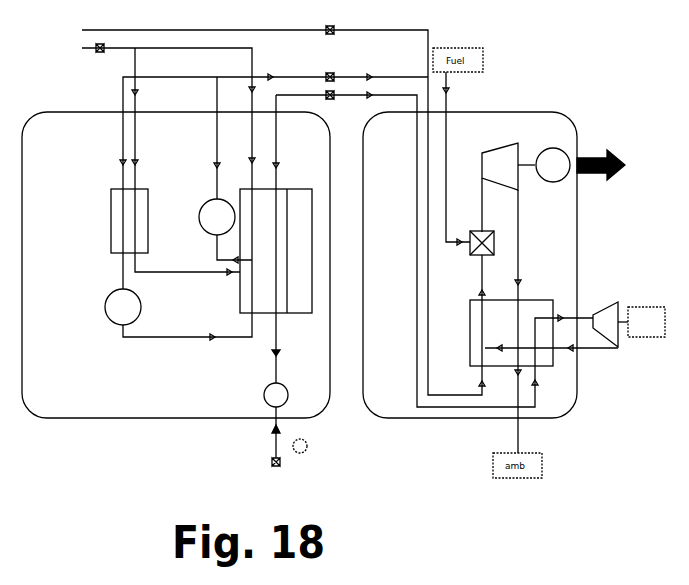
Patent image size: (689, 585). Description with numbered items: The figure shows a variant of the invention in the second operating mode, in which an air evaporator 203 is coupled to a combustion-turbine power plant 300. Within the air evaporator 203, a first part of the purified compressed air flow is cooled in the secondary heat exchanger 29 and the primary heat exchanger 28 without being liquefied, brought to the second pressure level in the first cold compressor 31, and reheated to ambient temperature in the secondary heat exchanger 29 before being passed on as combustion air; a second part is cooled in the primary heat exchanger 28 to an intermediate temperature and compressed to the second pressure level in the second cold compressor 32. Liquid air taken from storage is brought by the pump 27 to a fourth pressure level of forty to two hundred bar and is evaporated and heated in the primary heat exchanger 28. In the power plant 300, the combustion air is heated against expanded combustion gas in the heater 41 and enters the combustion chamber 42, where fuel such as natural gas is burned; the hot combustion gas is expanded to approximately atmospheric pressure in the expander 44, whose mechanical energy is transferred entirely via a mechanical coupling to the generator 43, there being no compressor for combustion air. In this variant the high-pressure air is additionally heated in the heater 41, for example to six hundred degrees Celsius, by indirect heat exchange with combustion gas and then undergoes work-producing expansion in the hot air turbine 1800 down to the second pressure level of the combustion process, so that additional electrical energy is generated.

The air evaporator 203 is at (172, 418).
The power plant 300 is at (546, 108).
The pump 27 is at (264, 395).
The primary heat exchanger 28 is at (276, 251).
The secondary heat exchanger 29 is at (122, 233).
The first cold compressor 31 is at (123, 307).
The second cold compressor 32 is at (217, 217).
The heater 41 is at (511, 333).
The combustion chamber 42 is at (489, 233).
The generator 43 is at (580, 181).
The expander 44 is at (508, 166).
The hot air turbine 1800 is at (618, 303).